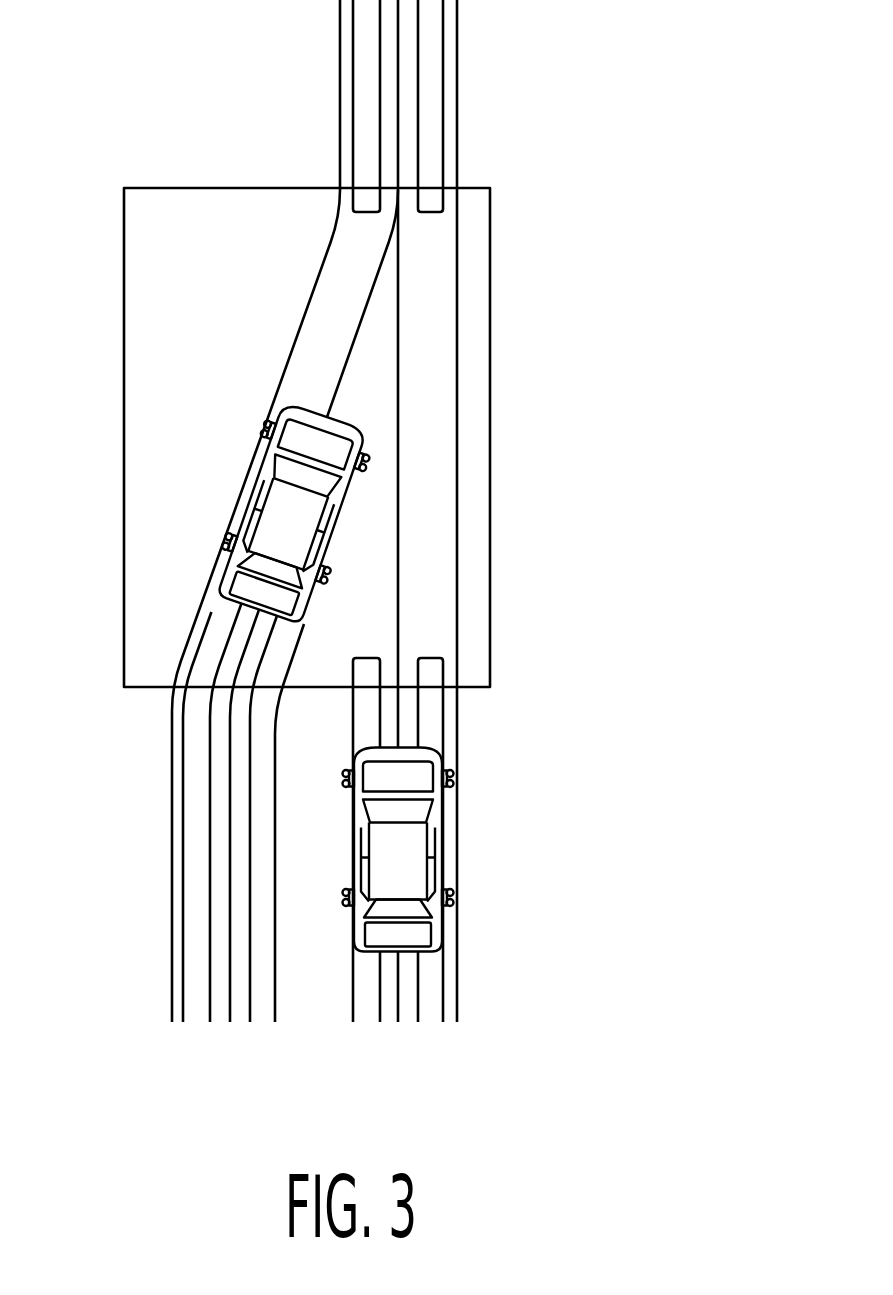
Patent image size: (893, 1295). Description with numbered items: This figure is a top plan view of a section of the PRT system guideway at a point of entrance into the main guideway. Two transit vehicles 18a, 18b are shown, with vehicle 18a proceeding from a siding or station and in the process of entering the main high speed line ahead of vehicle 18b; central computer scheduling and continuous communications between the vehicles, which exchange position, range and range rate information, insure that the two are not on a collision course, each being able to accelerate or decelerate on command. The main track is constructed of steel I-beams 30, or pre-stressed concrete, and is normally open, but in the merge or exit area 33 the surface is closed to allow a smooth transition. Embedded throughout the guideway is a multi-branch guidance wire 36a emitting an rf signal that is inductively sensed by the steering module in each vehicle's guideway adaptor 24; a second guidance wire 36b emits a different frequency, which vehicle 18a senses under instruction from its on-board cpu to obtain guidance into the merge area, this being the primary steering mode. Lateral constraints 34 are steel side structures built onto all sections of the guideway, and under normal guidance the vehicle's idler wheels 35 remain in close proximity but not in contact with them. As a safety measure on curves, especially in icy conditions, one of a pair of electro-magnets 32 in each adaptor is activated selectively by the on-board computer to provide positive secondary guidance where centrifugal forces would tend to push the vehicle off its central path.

The transit vehicle 18a is at (280, 517).
The transit vehicle 18b is at (403, 843).
The transit vehicle guideway adaptor 24 is at (423, 952).
The steel I-beams 30 is at (368, 65).
The electro-magnets 32 is at (340, 458).
The merge or exit area 33 is at (178, 188).
The lateral constraints 34 is at (168, 818).
The idler wheels 35 is at (232, 535).
The guidance wire 36a is at (400, 163).
The guidance wire 36b is at (358, 320).